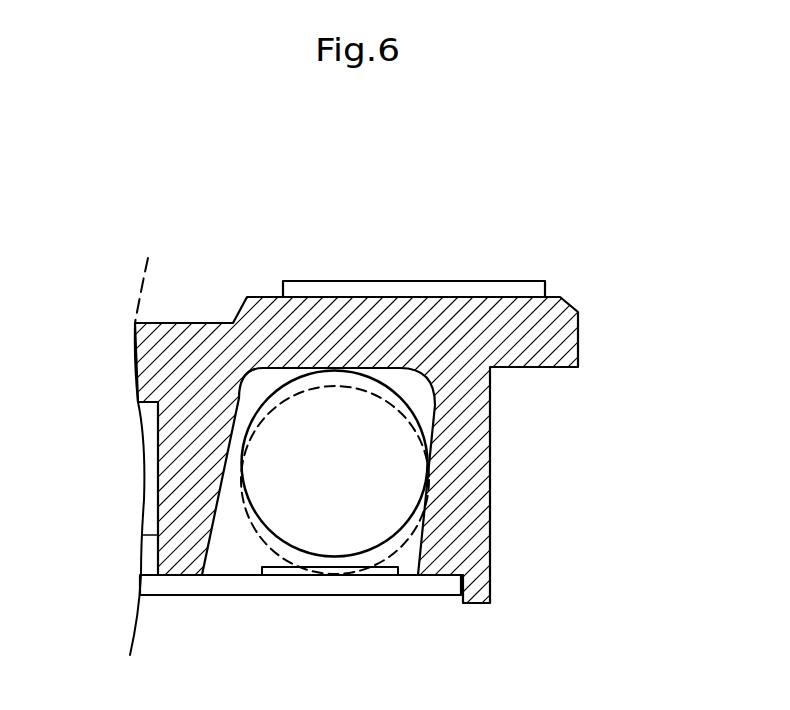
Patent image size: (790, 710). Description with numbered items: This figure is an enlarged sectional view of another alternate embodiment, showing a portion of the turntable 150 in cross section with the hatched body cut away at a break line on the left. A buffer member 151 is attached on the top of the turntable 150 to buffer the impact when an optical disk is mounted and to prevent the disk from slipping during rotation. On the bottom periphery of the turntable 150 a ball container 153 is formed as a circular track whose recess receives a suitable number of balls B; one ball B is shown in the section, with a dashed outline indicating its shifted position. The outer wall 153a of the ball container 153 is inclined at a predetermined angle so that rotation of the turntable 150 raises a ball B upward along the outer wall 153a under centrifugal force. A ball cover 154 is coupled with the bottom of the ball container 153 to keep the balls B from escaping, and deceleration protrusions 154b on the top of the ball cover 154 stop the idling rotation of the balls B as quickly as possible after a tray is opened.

The turntable 150 is at (575, 291).
The buffer member 151 is at (413, 281).
The ball container 153 is at (420, 403).
The outer wall 153a is at (415, 538).
The ball cover 154 is at (417, 590).
The deceleration protrusions 154b is at (282, 568).
The ball B is at (268, 395).